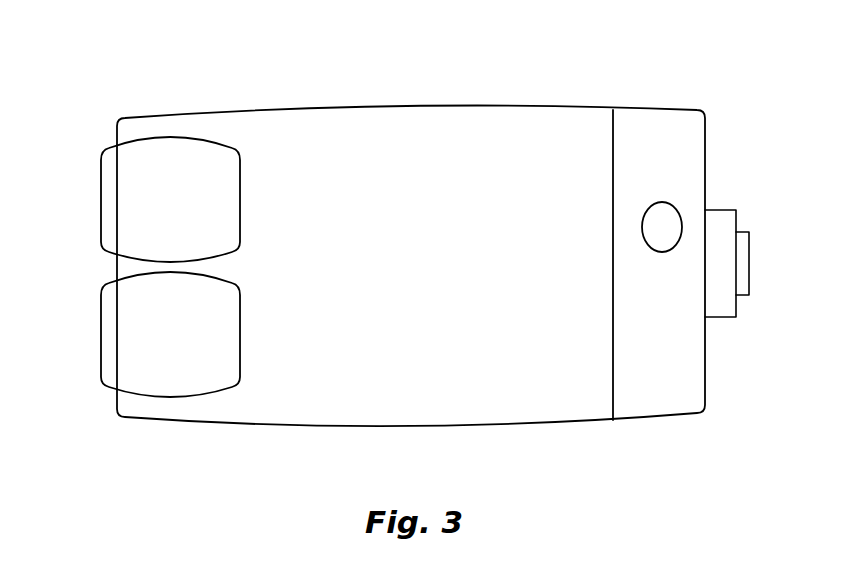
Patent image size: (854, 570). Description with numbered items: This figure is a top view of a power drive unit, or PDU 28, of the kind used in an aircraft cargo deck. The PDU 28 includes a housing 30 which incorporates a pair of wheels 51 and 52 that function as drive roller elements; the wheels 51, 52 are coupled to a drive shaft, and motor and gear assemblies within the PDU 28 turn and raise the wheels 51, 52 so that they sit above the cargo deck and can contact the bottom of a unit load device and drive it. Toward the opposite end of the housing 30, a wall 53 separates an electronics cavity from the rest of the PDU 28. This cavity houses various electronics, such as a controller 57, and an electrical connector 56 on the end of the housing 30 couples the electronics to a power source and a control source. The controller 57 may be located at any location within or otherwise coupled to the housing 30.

The power drive unit 28 is at (203, 46).
The housing 30 is at (406, 105).
The wheel 51 is at (101, 166).
The wheel 52 is at (101, 325).
The wall 53 is at (613, 145).
The electrical connector 56 is at (750, 272).
The controller 57 is at (668, 215).